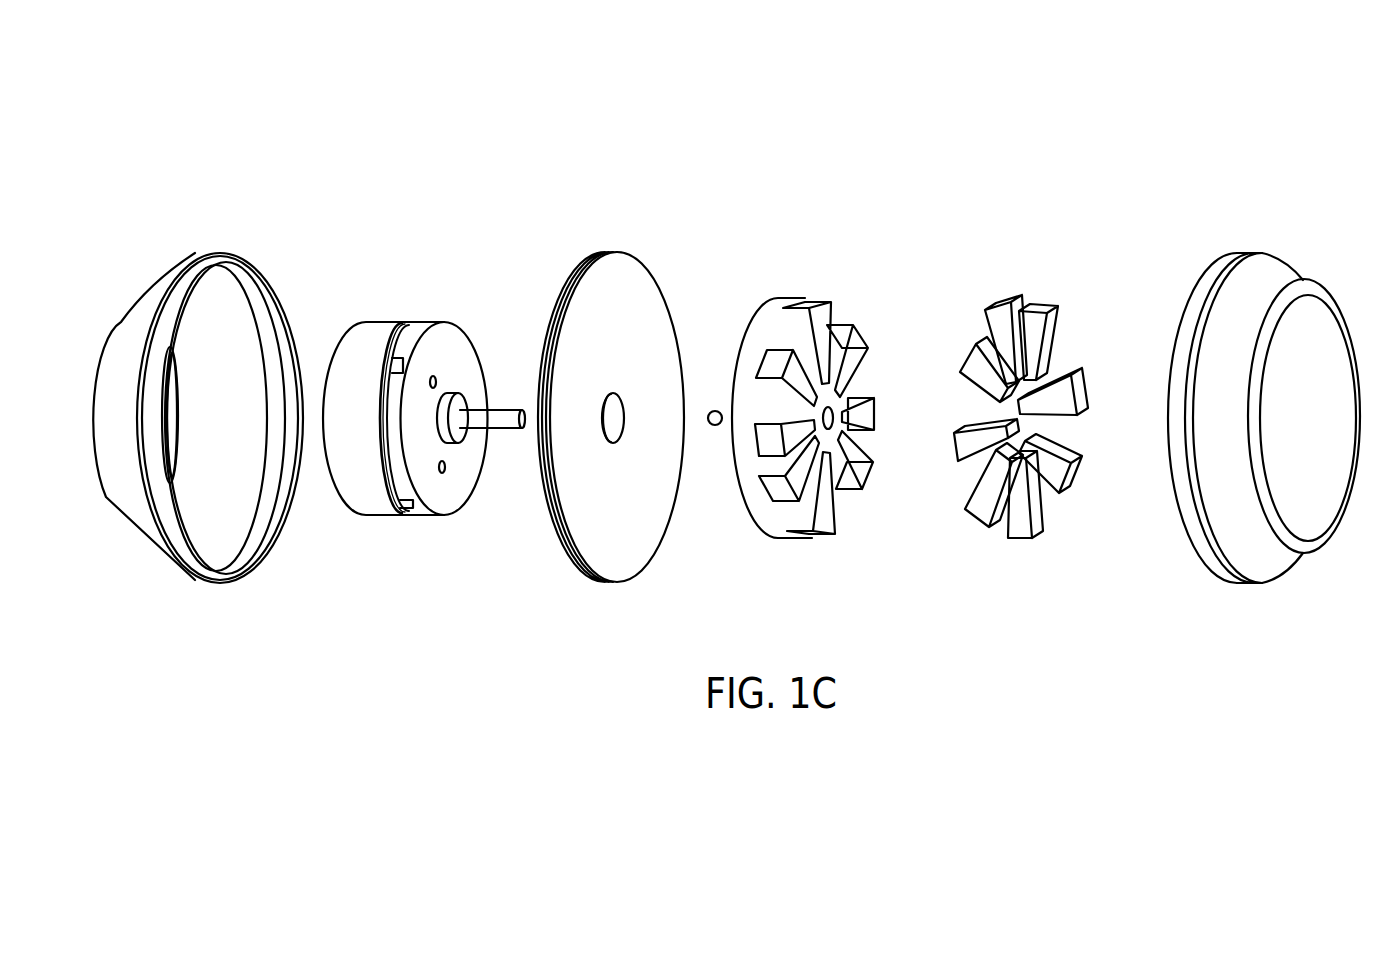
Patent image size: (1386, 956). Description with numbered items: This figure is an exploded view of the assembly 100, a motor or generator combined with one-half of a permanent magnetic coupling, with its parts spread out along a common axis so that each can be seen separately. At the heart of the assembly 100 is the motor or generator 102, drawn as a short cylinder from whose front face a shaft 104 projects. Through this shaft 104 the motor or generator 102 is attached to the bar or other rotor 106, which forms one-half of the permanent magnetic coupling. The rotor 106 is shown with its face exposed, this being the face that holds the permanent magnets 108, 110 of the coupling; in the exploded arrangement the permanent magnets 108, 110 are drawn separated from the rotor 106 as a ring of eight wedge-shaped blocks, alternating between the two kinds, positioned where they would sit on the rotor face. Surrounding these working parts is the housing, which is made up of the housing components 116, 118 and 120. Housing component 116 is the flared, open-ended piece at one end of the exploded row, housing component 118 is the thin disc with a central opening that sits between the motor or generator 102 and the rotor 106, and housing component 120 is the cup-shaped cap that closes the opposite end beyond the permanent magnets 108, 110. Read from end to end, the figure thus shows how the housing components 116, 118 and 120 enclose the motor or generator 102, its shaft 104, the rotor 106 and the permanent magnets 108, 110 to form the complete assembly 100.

The assembly 100 is at (279, 110).
The motor or generator 102 is at (372, 309).
The shaft 104 is at (497, 406).
The rotor 106 is at (751, 287).
The permanent magnets 108 is at (1000, 300).
The permanent magnets 110 is at (1042, 306).
The housing component 116 is at (137, 281).
The housing component 118 is at (572, 246).
The housing component 120 is at (1188, 248).